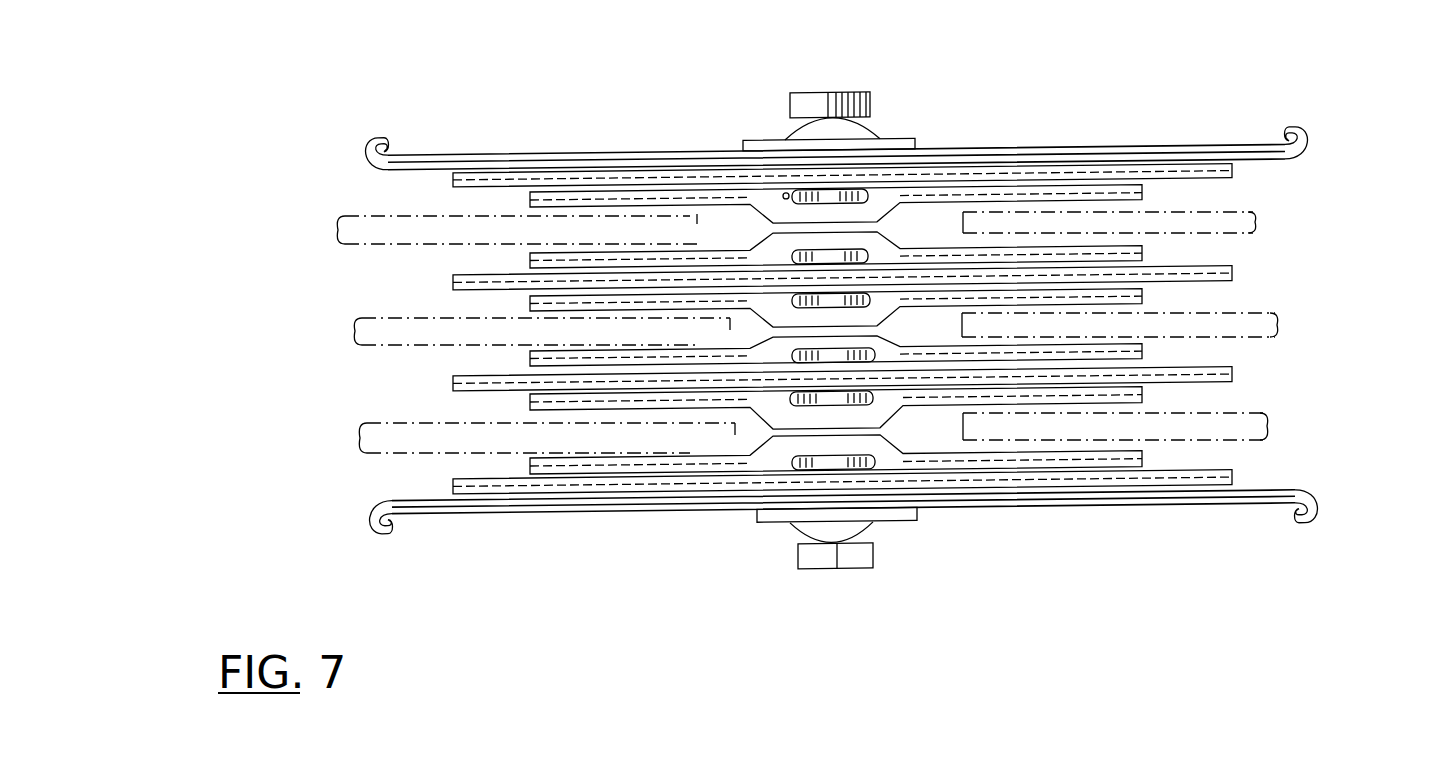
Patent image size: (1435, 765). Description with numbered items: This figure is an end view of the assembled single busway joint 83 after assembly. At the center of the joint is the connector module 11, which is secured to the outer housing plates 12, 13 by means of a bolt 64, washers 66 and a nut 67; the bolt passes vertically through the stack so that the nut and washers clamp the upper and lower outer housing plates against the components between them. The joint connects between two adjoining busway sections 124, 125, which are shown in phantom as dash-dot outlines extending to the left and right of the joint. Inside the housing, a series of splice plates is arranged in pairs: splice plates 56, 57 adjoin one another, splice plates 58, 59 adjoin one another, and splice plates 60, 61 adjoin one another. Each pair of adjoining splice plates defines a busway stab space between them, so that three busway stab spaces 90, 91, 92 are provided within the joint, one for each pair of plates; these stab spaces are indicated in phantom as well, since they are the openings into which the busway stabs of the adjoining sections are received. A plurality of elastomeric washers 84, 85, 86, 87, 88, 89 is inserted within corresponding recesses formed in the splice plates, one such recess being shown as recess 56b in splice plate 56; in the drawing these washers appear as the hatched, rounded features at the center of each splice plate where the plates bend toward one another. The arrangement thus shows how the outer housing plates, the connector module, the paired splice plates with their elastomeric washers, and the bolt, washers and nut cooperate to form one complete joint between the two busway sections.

The connector module 11 is at (444, 308).
The outer housing plate 12 is at (1123, 152).
The outer housing plate 13 is at (1175, 512).
The splice plate 56 is at (528, 203).
The recess 56b is at (783, 201).
The splice plate 57 is at (530, 258).
The splice plate 58 is at (528, 307).
The splice plate 59 is at (530, 362).
The splice plate 60 is at (530, 407).
The splice plate 61 is at (530, 463).
The bolt 64 is at (875, 557).
The washers 66 is at (877, 137).
The nut 67 is at (870, 109).
The single busway joint 83 is at (1362, 361).
The elastomeric washer 84 is at (868, 199).
The elastomeric washer 85 is at (865, 259).
The elastomeric washer 86 is at (870, 306).
The elastomeric washer 87 is at (877, 357).
The elastomeric washer 88 is at (873, 404).
The elastomeric washer 89 is at (873, 469).
The busway stab space 90 is at (648, 238).
The busway stab space 91 is at (658, 341).
The busway stab space 92 is at (658, 448).
The busway section 124 is at (1296, 270).
The busway section 125 is at (320, 268).